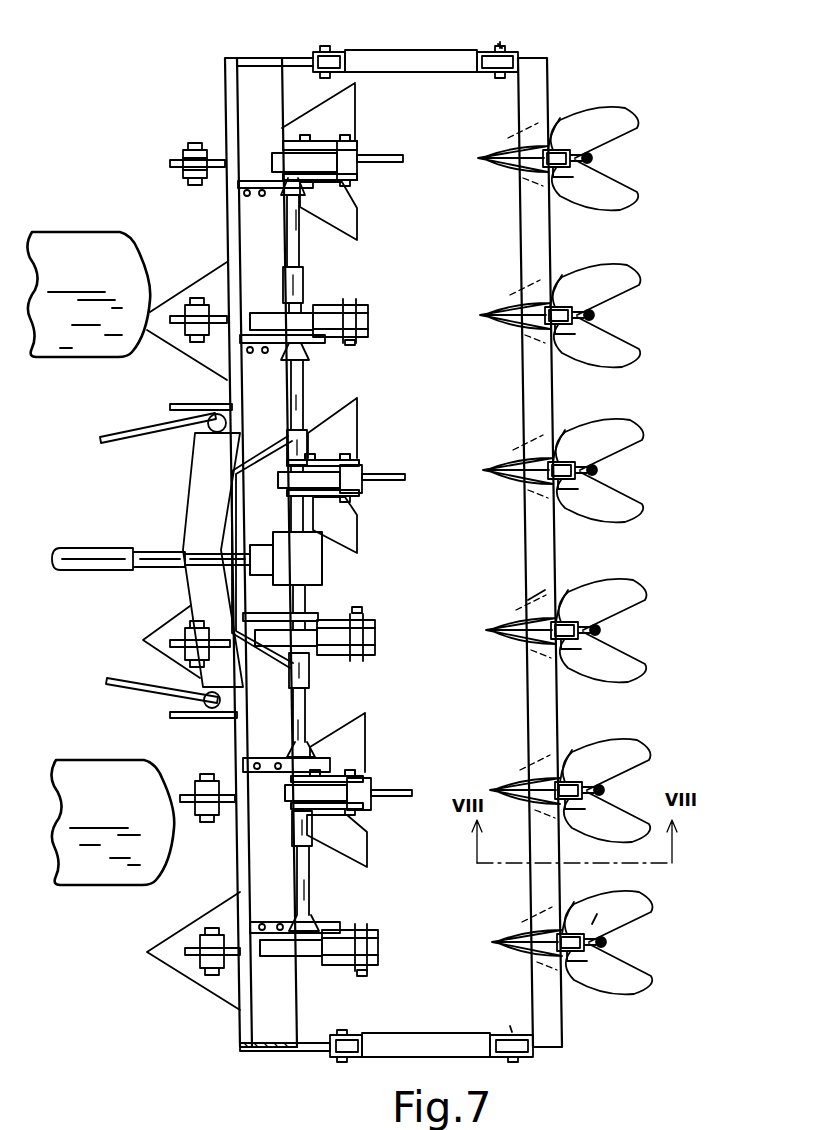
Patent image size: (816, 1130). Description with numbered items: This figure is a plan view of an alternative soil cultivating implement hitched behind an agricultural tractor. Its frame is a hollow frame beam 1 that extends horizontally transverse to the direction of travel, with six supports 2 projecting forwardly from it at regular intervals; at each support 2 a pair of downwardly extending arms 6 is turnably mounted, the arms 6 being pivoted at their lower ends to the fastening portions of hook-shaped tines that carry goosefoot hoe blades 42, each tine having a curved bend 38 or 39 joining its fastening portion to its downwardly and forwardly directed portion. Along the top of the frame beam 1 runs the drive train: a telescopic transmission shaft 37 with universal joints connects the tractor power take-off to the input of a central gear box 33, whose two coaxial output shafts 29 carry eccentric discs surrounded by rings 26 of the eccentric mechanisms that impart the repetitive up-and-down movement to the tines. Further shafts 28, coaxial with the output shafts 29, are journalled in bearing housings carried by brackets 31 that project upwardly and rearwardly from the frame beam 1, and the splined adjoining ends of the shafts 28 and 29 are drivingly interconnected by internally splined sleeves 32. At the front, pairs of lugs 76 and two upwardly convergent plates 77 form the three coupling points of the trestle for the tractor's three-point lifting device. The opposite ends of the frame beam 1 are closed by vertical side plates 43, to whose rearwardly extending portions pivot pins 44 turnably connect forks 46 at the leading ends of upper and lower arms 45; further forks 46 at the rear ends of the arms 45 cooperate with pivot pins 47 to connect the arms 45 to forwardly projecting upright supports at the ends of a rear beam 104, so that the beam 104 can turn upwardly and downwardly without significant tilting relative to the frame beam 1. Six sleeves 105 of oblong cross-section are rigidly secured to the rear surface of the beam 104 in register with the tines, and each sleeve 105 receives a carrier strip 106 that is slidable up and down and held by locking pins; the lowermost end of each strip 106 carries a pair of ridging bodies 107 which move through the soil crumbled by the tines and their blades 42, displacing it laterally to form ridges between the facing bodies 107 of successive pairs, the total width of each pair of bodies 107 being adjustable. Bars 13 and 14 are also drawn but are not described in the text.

The frame beam 1 is at (245, 92).
The supports 2 is at (172, 163).
The arms 6 is at (185, 145).
The connecting bar 13 is at (272, 1055).
The clamp bolt 14 is at (358, 178).
The ring 26 is at (280, 160).
The shaft 28 is at (299, 232).
The output shafts 29 is at (286, 558).
The bracket 31 is at (240, 188).
The internally splined sleeves 32 is at (303, 280).
The central gear box 33 is at (322, 555).
The telescopic transmission shaft 37 is at (75, 548).
The curved bend 38 is at (368, 305).
The curved bend 39 is at (420, 148).
The blade 42 is at (345, 108).
The side plates 43 is at (275, 1060).
The pivot pins 44 is at (330, 38).
The arms 45 is at (268, 40).
The forks 46 is at (345, 50).
The pivot pins 47 is at (502, 42).
The lugs 76 is at (172, 407).
The upwardly convergent plates 77 is at (195, 445).
The beam 104 is at (530, 565).
The sleeves 105 is at (575, 118).
The carrier strip 106 is at (523, 180).
The ridging bodies 107 is at (625, 190).